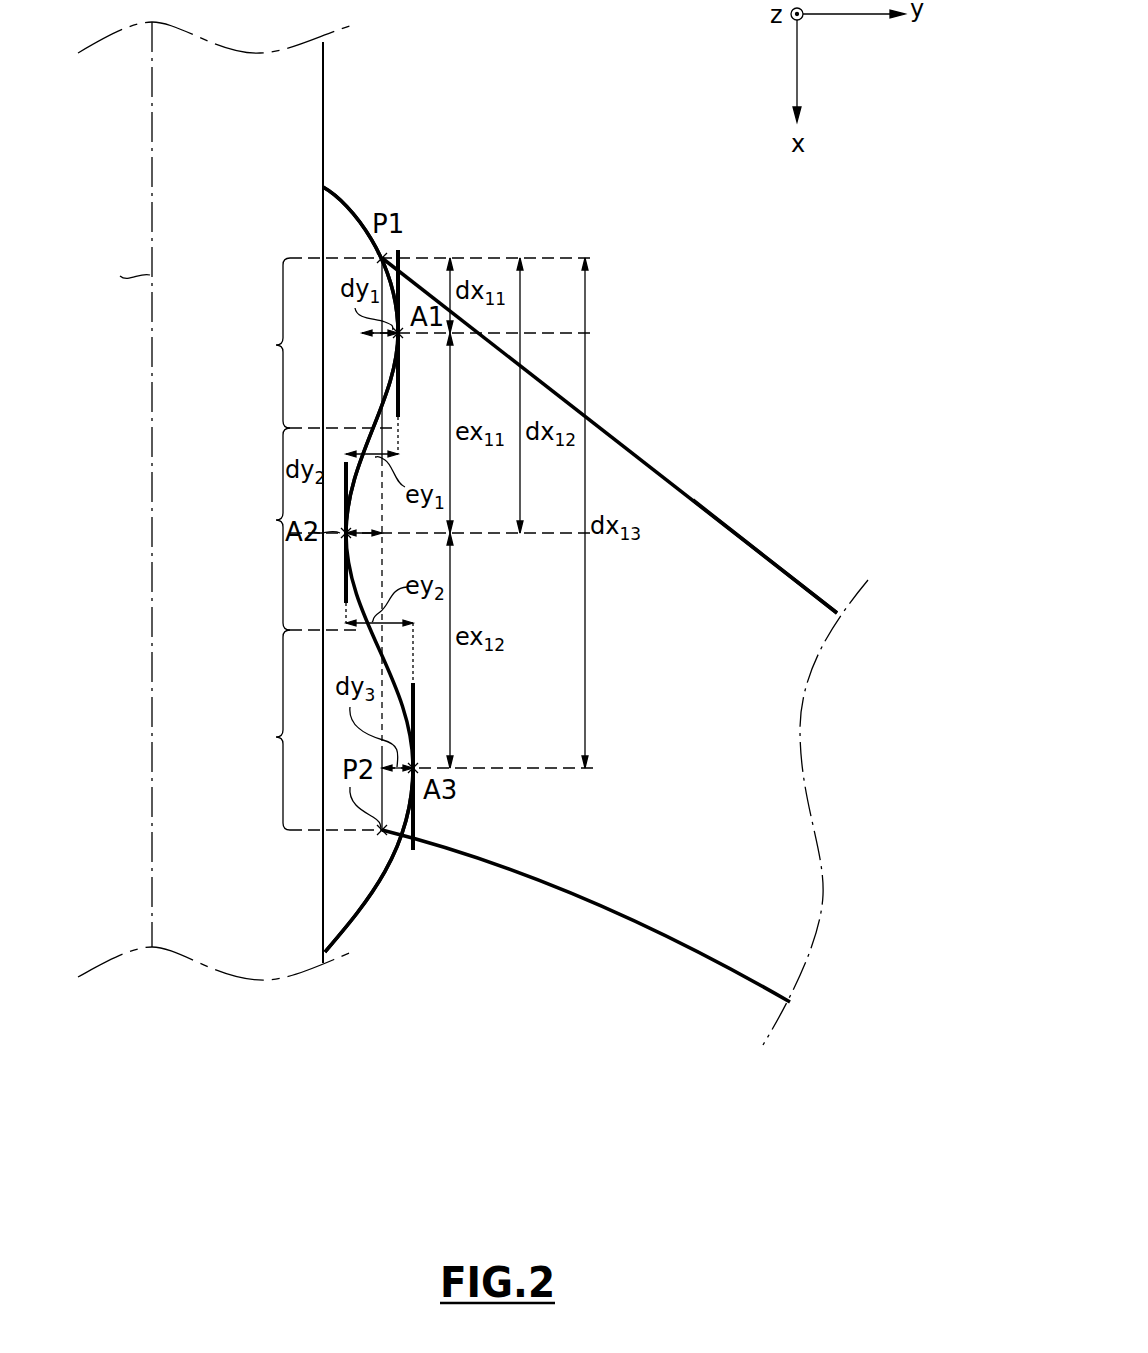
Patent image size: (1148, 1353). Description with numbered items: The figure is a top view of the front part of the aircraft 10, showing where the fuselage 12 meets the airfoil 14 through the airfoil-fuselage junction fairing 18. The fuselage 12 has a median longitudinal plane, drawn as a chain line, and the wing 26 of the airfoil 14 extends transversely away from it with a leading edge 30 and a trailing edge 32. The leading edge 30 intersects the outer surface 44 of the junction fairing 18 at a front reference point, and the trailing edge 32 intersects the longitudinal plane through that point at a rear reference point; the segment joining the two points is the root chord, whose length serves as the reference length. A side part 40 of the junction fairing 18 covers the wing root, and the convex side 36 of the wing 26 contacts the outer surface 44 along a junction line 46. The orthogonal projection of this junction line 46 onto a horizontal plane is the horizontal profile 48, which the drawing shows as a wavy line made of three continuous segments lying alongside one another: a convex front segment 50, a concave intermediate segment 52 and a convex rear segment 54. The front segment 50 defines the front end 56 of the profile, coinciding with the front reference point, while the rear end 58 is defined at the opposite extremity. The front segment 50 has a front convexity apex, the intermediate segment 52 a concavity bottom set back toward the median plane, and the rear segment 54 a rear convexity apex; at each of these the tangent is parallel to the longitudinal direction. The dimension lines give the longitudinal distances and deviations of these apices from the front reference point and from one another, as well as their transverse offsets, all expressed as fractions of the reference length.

The aircraft 10 is at (537, 1024).
The fuselage 12 is at (211, 938).
The airfoil 14 is at (705, 926).
The airfoil-fuselage junction fairing 18 is at (363, 887).
The wing 26 is at (762, 597).
The leading edge 30 is at (693, 500).
The trailing edge 32 is at (552, 888).
The convex side 36 is at (709, 691).
The side part 40 is at (356, 918).
The outer surface 44 is at (338, 222).
The junction line 46 is at (330, 600).
The horizontal profile 48 is at (371, 395).
The front segment 50 is at (265, 343).
The intermediate segment 52 is at (264, 529).
The rear segment 54 is at (265, 730).
The front end 56 is at (405, 250).
The rear end 58 is at (415, 852).